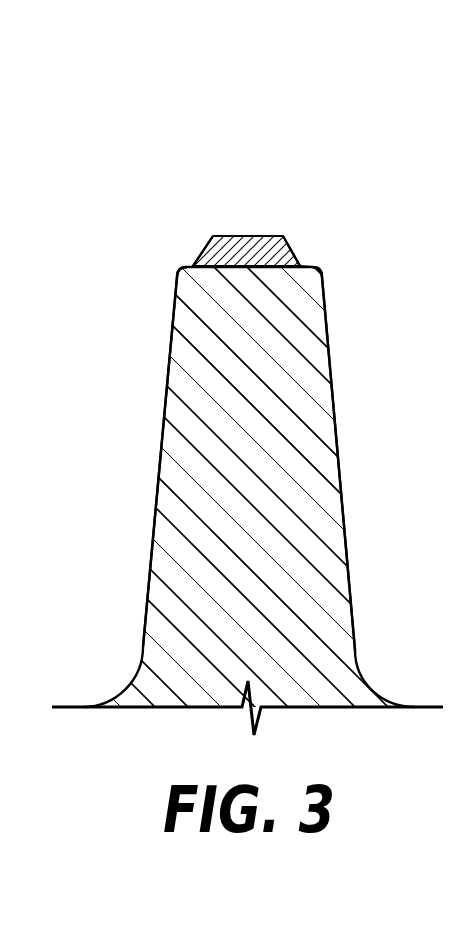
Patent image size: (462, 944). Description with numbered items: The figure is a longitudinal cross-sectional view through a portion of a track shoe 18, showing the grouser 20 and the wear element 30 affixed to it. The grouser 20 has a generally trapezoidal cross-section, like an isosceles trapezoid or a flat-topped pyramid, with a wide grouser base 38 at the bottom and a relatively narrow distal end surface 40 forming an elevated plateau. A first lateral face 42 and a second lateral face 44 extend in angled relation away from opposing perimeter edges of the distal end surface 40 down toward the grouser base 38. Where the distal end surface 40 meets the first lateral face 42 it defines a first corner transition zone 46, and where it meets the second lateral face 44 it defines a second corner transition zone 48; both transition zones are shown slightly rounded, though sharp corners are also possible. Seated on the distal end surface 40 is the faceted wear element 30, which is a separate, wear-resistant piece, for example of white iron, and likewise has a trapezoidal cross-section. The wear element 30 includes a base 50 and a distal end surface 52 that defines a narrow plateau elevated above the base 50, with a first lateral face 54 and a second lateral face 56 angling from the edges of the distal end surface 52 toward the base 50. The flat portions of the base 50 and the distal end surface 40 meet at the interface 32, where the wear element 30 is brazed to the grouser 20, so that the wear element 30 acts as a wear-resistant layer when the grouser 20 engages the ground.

The track shoe 18 is at (334, 138).
The grouser 20 is at (333, 428).
The wear element 30 is at (288, 227).
The interface 32 is at (245, 267).
The grouser base 38 is at (287, 652).
The distal end surface 40 is at (313, 265).
The first lateral face 42 is at (157, 508).
The second lateral face 44 is at (342, 535).
The first corner transition zone 46 is at (177, 266).
The second corner transition zone 48 is at (324, 264).
The base 50 is at (232, 266).
The distal end surface 52 is at (253, 237).
The first lateral face 54 is at (205, 262).
The second lateral face 56 is at (304, 265).